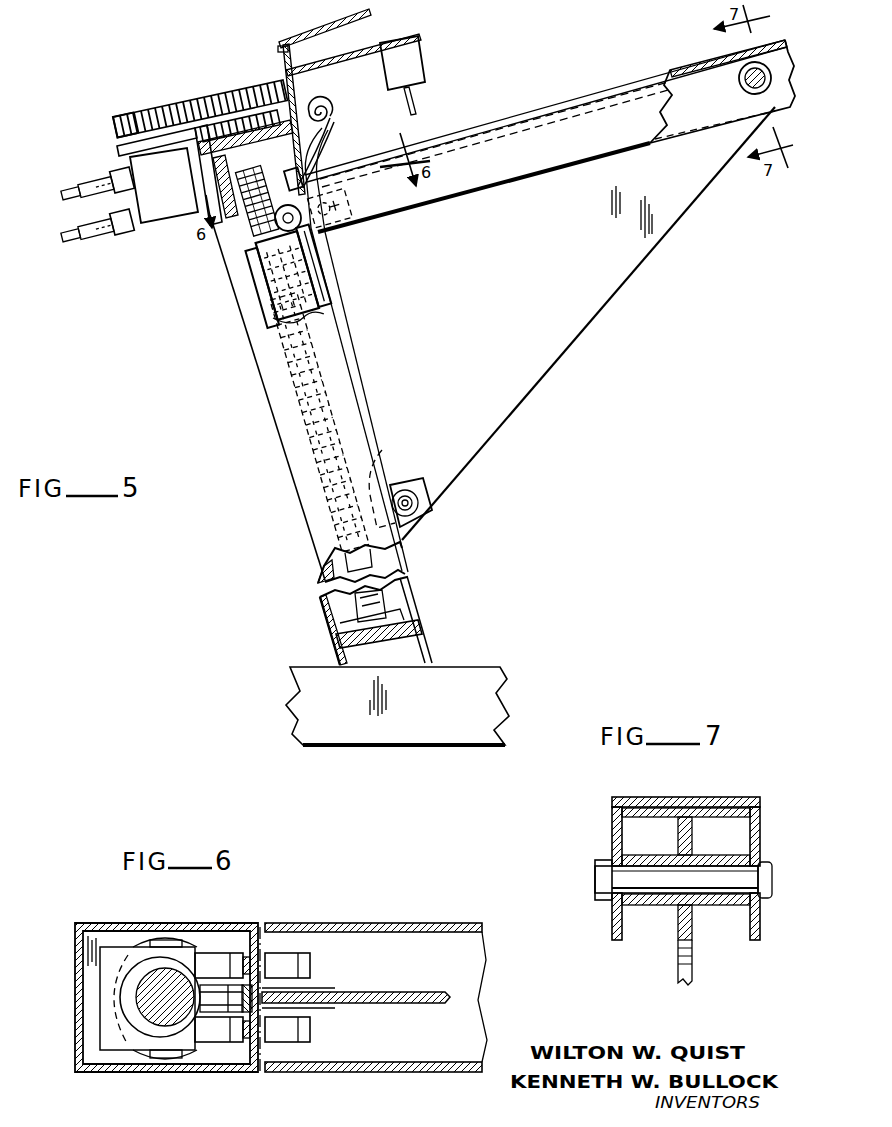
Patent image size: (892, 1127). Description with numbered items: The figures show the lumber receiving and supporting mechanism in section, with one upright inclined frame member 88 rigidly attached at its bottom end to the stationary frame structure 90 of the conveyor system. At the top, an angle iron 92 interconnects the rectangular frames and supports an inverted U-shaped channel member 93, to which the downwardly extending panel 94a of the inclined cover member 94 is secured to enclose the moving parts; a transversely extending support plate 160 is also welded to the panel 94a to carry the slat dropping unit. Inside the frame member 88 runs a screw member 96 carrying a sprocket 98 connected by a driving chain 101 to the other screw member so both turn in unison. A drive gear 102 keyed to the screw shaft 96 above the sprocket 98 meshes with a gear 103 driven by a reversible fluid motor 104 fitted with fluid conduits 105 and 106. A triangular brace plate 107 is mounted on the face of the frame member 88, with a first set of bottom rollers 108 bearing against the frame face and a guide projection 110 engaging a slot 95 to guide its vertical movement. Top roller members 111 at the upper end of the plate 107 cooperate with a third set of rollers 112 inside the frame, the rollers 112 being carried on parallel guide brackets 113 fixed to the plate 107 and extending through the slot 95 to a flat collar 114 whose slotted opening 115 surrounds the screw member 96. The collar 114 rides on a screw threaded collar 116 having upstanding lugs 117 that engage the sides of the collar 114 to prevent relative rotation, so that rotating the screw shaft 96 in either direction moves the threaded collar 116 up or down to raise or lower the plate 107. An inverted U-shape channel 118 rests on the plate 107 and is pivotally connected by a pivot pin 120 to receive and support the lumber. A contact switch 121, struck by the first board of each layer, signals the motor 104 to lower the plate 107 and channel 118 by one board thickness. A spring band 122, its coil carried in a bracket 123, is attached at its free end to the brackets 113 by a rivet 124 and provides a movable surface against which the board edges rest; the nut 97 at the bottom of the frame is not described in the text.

In FIG. 5, the frame member 88 is at (280, 452).
In FIG. 6, the frame member 88 is at (70, 978).
In FIG. 5, the frame structure 90 is at (446, 735).
In FIG. 5, the angle iron 92 is at (206, 202).
In FIG. 5, the inverted U-shaped channel member 93 is at (300, 108).
In FIG. 5, the inclined cover member 94 is at (302, 39).
In FIG. 5, the downwardly extending panel 94a is at (280, 50).
In FIG. 5, the slot 95 is at (312, 172).
In FIG. 6, the slot 95 is at (254, 1030).
In FIG. 5, the screw member 96 is at (258, 372).
In FIG. 6, the screw member 96 is at (138, 965).
In FIG. 5, the nut 97 is at (332, 635).
In FIG. 5, the sprocket 98 is at (292, 73).
In FIG. 5, the driving chain 101 is at (200, 100).
In FIG. 5, the drive gear 102 is at (253, 84).
In FIG. 5, the gear 103 is at (121, 116).
In FIG. 5, the reversible motor 104 is at (170, 212).
In FIG. 5, the fluid conduit 105 is at (106, 181).
In FIG. 5, the fluid conduit 106 is at (124, 233).
In FIG. 5, the triangular brace plate 107 is at (560, 328).
In FIG. 6, the triangular brace plate 107 is at (406, 998).
In FIG. 7, the triangular brace plate 107 is at (690, 958).
In FIG. 5, the bottom rollers 108 is at (420, 512).
In FIG. 5, the guide projection 110 is at (374, 455).
In FIG. 5, the top roller members 111 is at (338, 206).
In FIG. 6, the top roller members 111 is at (305, 972).
In FIG. 5, the rollers 112 is at (316, 260).
In FIG. 6, the rollers 112 is at (222, 962).
In FIG. 5, the guide brackets 113 is at (300, 229).
In FIG. 6, the guide brackets 113 is at (326, 988).
In FIG. 5, the flat collar 114 is at (254, 272).
In FIG. 6, the flat collar 114 is at (112, 1040).
In FIG. 6, the slotted opening 115 is at (165, 1020).
In FIG. 5, the screw threaded collar 116 is at (268, 322).
In FIG. 6, the screw threaded collar 116 is at (184, 945).
In FIG. 5, the upstanding lugs 117 is at (280, 288).
In FIG. 6, the upstanding lugs 117 is at (166, 942).
In FIG. 5, the inverted U-shape channel 118 is at (591, 115).
In FIG. 6, the inverted U-shape channel 118 is at (444, 925).
In FIG. 7, the inverted U-shape channel 118 is at (758, 835).
In FIG. 5, the pivot pin 120 is at (748, 92).
In FIG. 7, the pivot pin 120 is at (600, 873).
In FIG. 5, the contact switch 121 is at (410, 62).
In FIG. 5, the spring band 122 is at (325, 124).
In FIG. 5, the bracket 123 is at (325, 110).
In FIG. 5, the rivet 124 is at (310, 178).
In FIG. 5, the support plate 160 is at (378, 58).